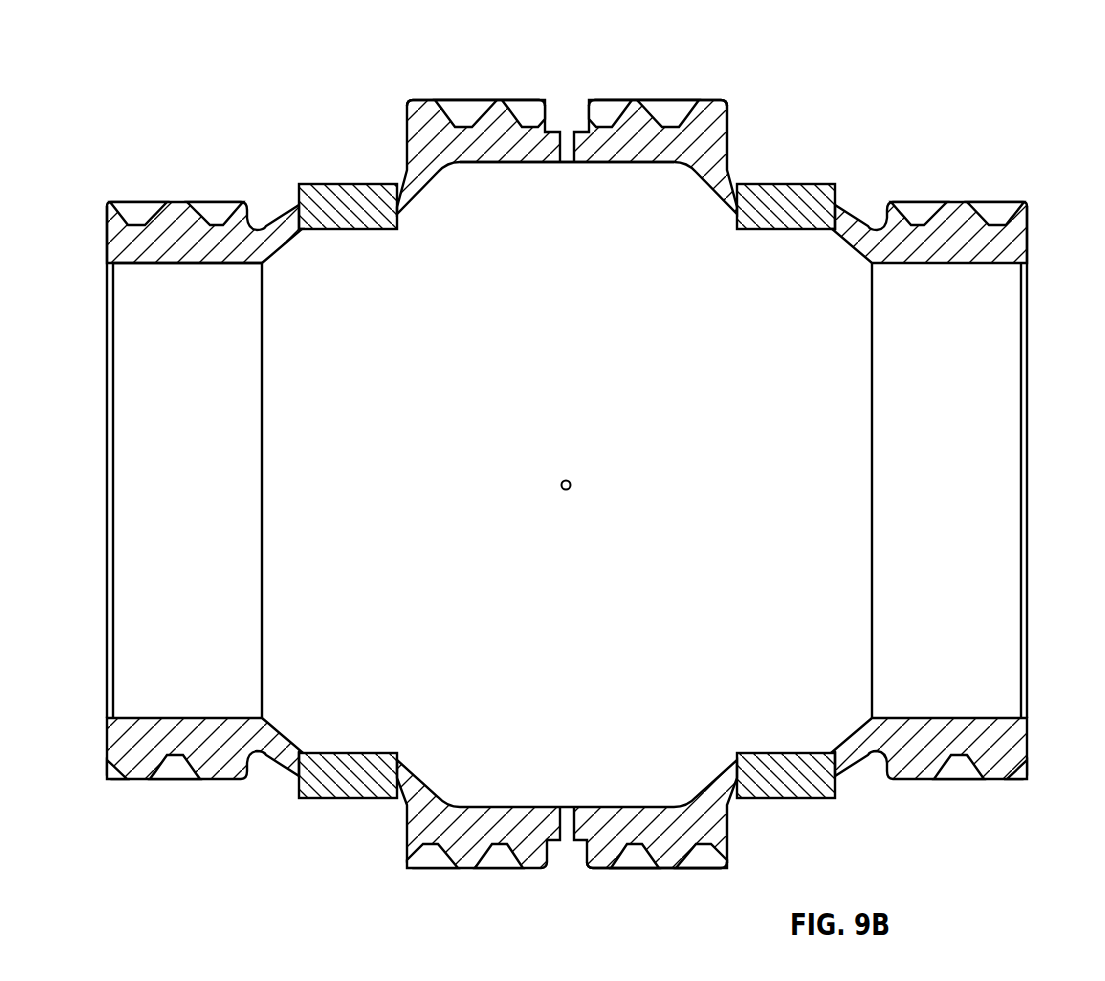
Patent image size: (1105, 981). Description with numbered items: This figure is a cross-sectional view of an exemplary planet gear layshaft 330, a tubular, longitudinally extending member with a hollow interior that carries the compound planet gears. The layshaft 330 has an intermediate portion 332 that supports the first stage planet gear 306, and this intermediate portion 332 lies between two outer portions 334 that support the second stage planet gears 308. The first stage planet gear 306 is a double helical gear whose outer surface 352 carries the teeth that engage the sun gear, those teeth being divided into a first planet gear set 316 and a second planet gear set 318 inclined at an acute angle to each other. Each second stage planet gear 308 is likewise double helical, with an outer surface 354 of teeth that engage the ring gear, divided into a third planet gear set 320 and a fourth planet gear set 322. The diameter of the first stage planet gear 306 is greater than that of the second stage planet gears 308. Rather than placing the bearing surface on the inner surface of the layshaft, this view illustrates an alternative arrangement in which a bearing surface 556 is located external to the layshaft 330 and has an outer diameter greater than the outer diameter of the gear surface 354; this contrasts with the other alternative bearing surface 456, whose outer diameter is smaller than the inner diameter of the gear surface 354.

The first stage planet gear 306 is at (548, 52).
The second stage planet gear 308 is at (156, 159).
The first planet gear set 316 is at (495, 868).
The second planet gear set 318 is at (665, 868).
The third planet gear set 320 is at (125, 781).
The fourth planet gear set 322 is at (990, 781).
The layshaft 330 is at (1028, 228).
The intermediate portion 332 is at (501, 163).
The outer portions 334 is at (123, 239).
The outer surface 352 is at (427, 100).
The outer surface 354 is at (190, 202).
The bearing surface 456 is at (128, 265).
The bearing surface 556 is at (338, 184).